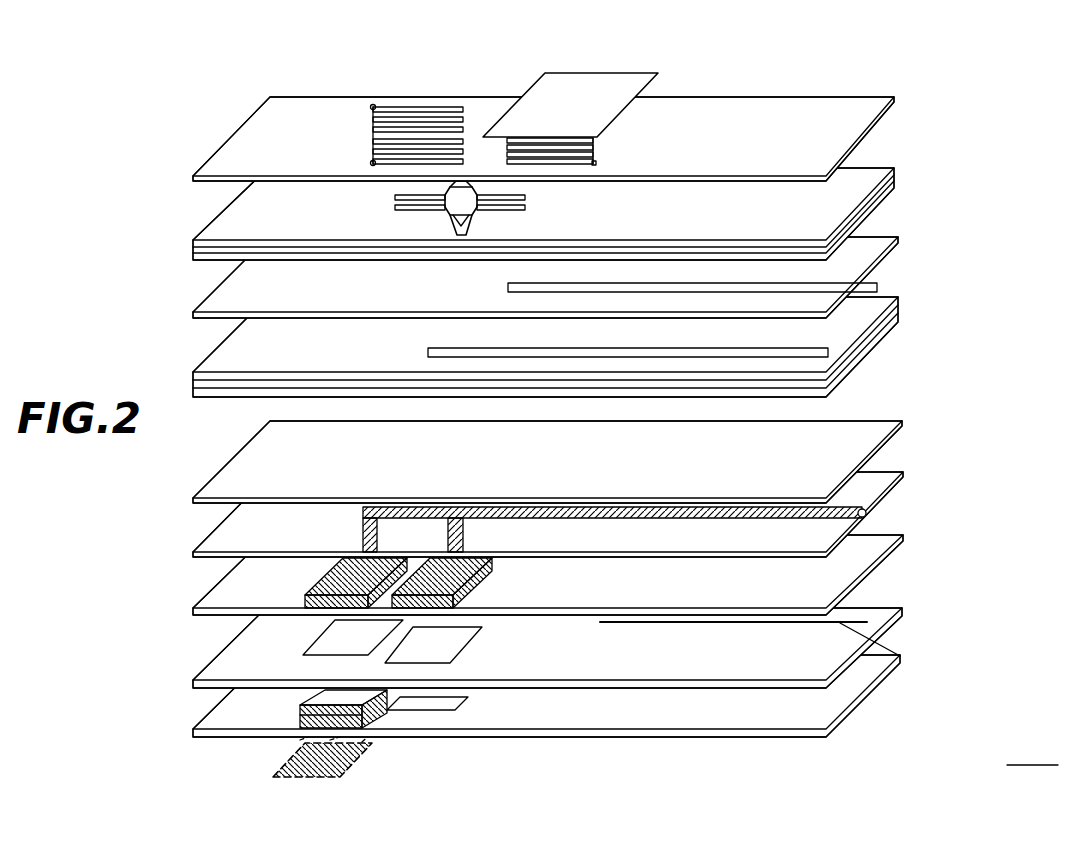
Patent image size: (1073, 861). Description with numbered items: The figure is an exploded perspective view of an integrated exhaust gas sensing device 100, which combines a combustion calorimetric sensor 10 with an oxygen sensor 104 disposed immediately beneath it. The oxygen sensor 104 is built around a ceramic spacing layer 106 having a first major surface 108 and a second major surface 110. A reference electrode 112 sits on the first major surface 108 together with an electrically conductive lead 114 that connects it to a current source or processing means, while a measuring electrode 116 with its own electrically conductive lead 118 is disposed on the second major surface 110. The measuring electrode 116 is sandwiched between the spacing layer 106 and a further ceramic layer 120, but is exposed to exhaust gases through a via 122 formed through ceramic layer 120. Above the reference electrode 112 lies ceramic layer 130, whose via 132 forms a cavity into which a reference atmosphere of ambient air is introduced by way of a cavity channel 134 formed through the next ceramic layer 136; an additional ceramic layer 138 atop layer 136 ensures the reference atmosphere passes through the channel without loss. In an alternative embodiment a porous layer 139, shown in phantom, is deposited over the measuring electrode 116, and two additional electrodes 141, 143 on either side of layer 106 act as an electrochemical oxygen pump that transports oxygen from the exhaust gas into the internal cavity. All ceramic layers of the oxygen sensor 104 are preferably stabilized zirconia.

The combustion calorimetric sensor 10 is at (232, 92).
The integrated exhaust gas sensing device 100 is at (1032, 753).
The oxygen sensor 104 is at (174, 580).
The ceramic spacing layer 106 is at (898, 617).
The first major surface 108 is at (900, 610).
The second major surface 110 is at (893, 618).
The reference electrode 112 is at (337, 637).
The electrically conductive lead 114 is at (900, 657).
The measuring electrode 116 is at (375, 693).
The electrically conductive lead 118 is at (580, 700).
The ceramic layer 120 is at (827, 735).
The via 122 is at (280, 731).
The ceramic layer 130 is at (900, 537).
The via 132 is at (312, 590).
The cavity channel 134 is at (868, 508).
The layer of ceramic material 136 is at (203, 543).
The additional layer of ceramic material 138 is at (893, 421).
The porous layer 139 is at (325, 778).
The electrode 141 is at (452, 642).
The electrode 143 is at (458, 702).